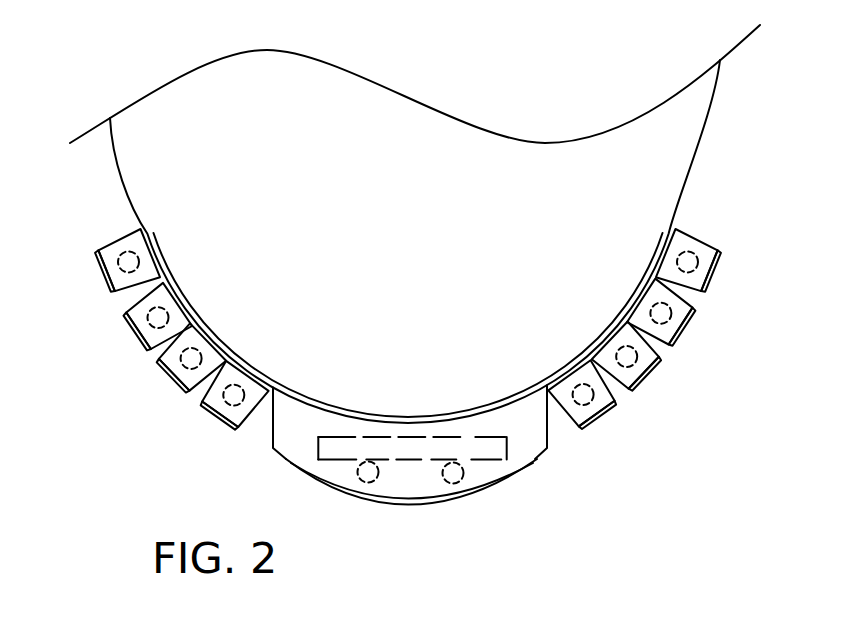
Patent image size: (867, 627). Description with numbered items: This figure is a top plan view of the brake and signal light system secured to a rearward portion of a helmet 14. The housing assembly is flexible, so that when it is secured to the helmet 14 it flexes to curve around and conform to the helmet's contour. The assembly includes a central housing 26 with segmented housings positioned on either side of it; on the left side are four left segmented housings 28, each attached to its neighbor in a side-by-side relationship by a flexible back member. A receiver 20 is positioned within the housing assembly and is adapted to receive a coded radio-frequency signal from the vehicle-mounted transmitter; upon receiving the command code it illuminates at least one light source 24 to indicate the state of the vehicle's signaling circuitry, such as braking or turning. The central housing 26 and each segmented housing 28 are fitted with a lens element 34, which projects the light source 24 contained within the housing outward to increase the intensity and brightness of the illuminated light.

The helmet 14 is at (406, 256).
The receiver 20 is at (407, 455).
The light source 24 is at (236, 392).
The central housing 26 is at (545, 447).
The left segmented housing 28 is at (103, 250).
The lens element 34 is at (97, 265).